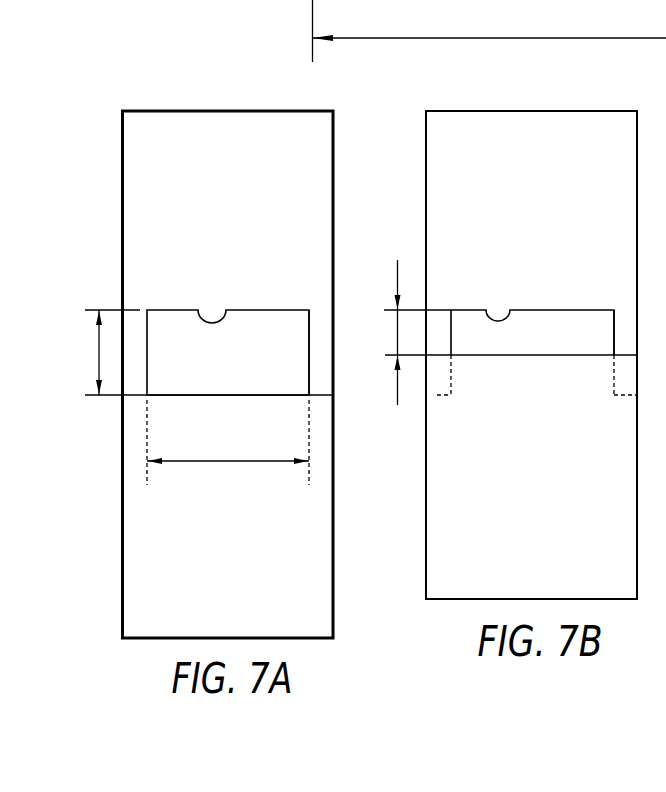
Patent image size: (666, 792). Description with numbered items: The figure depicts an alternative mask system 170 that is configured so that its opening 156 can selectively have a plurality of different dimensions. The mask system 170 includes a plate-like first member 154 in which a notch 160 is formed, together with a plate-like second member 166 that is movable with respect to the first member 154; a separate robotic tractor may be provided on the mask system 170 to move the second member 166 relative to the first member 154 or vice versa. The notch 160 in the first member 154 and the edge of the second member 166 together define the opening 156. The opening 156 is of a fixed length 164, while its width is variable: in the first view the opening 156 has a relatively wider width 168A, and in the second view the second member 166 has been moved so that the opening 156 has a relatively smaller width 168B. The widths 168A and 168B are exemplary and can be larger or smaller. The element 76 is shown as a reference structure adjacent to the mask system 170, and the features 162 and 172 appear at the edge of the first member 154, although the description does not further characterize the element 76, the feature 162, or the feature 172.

In FIG. 7B, the housing wall 76 is at (526, 38).
In FIG. 7A, the first member 154 is at (152, 110).
In FIG. 7B, the first member 154 is at (426, 147).
In FIG. 7A, the opening 156 is at (223, 320).
In FIG. 7B, the opening 156 is at (500, 320).
In FIG. 7A, the notch 160 is at (308, 374).
In FIG. 7B, the notch 160 is at (613, 336).
In FIG. 7B, the side edge 162 is at (651, 300).
In FIG. 7A, the length 164 is at (232, 463).
In FIG. 7A, the second member 166 is at (122, 488).
In FIG. 7B, the second member 166 is at (426, 478).
In FIG. 7A, the width 168A is at (98, 348).
In FIG. 7B, the width 168B is at (395, 335).
In FIG. 7A, the mask system 170 is at (123, 165).
In FIG. 7B, the mask system 170 is at (426, 218).
In FIG. 7B, the plate side edge 172 is at (651, 205).